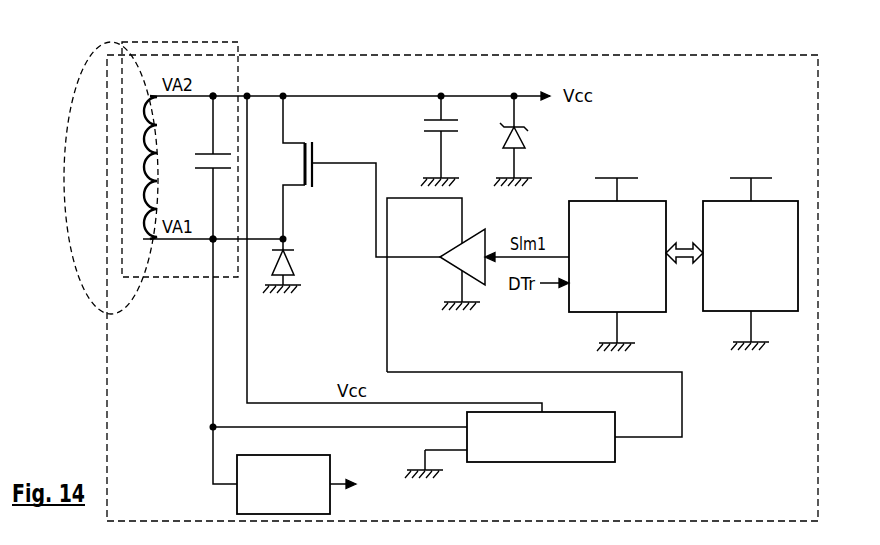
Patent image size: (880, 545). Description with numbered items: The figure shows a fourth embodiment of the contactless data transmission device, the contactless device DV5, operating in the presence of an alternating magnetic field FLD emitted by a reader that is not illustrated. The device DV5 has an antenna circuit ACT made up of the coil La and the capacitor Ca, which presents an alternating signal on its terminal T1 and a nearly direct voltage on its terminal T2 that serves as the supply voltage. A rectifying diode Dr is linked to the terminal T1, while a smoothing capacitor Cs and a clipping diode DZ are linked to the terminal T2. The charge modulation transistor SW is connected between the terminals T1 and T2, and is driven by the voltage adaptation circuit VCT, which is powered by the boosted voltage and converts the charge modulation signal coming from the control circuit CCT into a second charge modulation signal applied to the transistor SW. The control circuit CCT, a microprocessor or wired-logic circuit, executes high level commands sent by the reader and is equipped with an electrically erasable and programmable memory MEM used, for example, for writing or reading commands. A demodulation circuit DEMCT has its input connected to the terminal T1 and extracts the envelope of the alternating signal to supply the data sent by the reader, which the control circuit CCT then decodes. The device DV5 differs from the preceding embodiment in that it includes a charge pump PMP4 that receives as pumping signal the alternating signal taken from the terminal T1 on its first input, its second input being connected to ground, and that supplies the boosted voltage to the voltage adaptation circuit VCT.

The contactless device DV5 is at (162, 510).
The antenna circuit ACT is at (238, 78).
The alternating magnetic field FLD is at (78, 283).
The coil La is at (137, 254).
The capacitor Ca is at (202, 150).
The terminal T1 is at (213, 242).
The terminal T2 is at (213, 95).
The charge modulation transistor SW is at (313, 167).
The rectifying diode Dr is at (295, 266).
The smoothing capacitor Cs is at (435, 133).
The clipping diode DZ is at (525, 148).
The voltage adaptation circuit VCT is at (452, 268).
The control circuit CCT is at (635, 269).
The memory MEM is at (772, 269).
The charge pump PMP4 is at (565, 450).
The demodulation circuit DEMCT is at (315, 495).